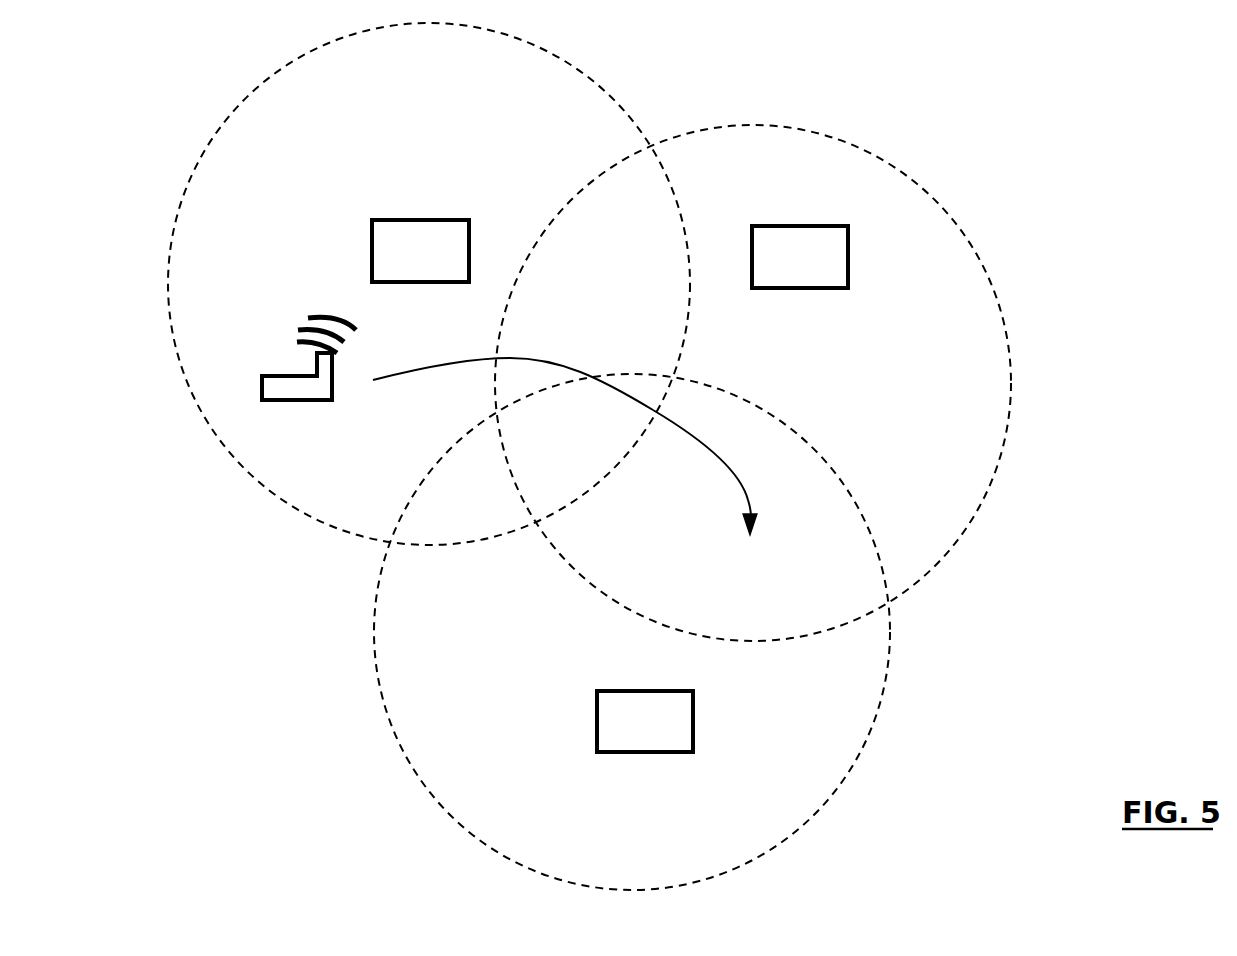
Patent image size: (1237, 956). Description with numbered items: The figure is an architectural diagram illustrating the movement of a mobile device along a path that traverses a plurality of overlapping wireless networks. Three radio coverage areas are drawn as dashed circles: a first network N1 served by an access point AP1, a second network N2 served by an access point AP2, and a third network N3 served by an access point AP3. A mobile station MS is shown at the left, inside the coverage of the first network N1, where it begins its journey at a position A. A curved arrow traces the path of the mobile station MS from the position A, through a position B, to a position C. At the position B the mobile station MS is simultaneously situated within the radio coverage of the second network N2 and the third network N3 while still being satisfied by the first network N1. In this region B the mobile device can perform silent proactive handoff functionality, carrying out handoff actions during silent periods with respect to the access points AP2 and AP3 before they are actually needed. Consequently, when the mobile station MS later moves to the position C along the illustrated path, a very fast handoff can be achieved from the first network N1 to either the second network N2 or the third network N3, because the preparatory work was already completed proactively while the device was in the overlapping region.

The first network N1 is at (530, 113).
The second network N2 is at (964, 328).
The third network N3 is at (789, 768).
The access point AP1 is at (420, 251).
The access point AP2 is at (800, 257).
The access point AP3 is at (645, 721).
The mobile station MS is at (309, 383).
The position A is at (441, 390).
The position B is at (581, 392).
The position C is at (705, 472).